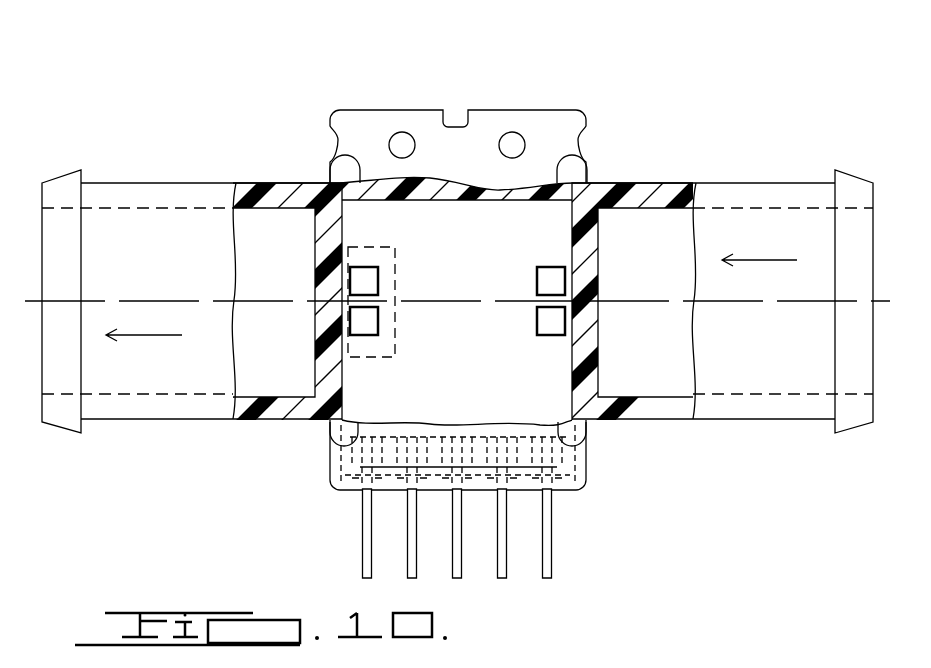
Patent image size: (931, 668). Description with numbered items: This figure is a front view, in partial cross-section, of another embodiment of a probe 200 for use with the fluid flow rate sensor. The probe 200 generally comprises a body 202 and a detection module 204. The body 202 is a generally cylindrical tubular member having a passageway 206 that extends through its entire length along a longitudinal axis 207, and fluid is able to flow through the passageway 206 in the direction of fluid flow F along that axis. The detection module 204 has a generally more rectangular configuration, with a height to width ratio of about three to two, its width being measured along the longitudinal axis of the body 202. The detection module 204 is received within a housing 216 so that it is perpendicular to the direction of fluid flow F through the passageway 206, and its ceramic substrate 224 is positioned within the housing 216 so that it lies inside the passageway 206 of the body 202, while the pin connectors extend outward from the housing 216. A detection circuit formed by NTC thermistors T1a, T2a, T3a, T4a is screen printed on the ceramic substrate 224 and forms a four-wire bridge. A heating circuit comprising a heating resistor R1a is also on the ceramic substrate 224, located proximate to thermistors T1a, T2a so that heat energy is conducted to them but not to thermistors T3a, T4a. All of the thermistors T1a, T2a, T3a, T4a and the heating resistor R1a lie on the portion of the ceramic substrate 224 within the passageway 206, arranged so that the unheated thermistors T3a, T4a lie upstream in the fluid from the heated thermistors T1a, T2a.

The probe 200 is at (174, 144).
The body 202 is at (223, 183).
The detection module 204 is at (594, 473).
The passageway 206 is at (165, 392).
The longitudinal axis 207 is at (107, 300).
The housing 216 is at (577, 192).
The ceramic substrate 224 is at (337, 470).
The NTC thermistor T1a is at (360, 282).
The NTC thermistor T2a is at (365, 320).
The NTC thermistor T3a is at (550, 283).
The NTC thermistor T4a is at (558, 322).
The heating resistor R1a is at (393, 280).
The fluid flow direction F is at (451, 295).